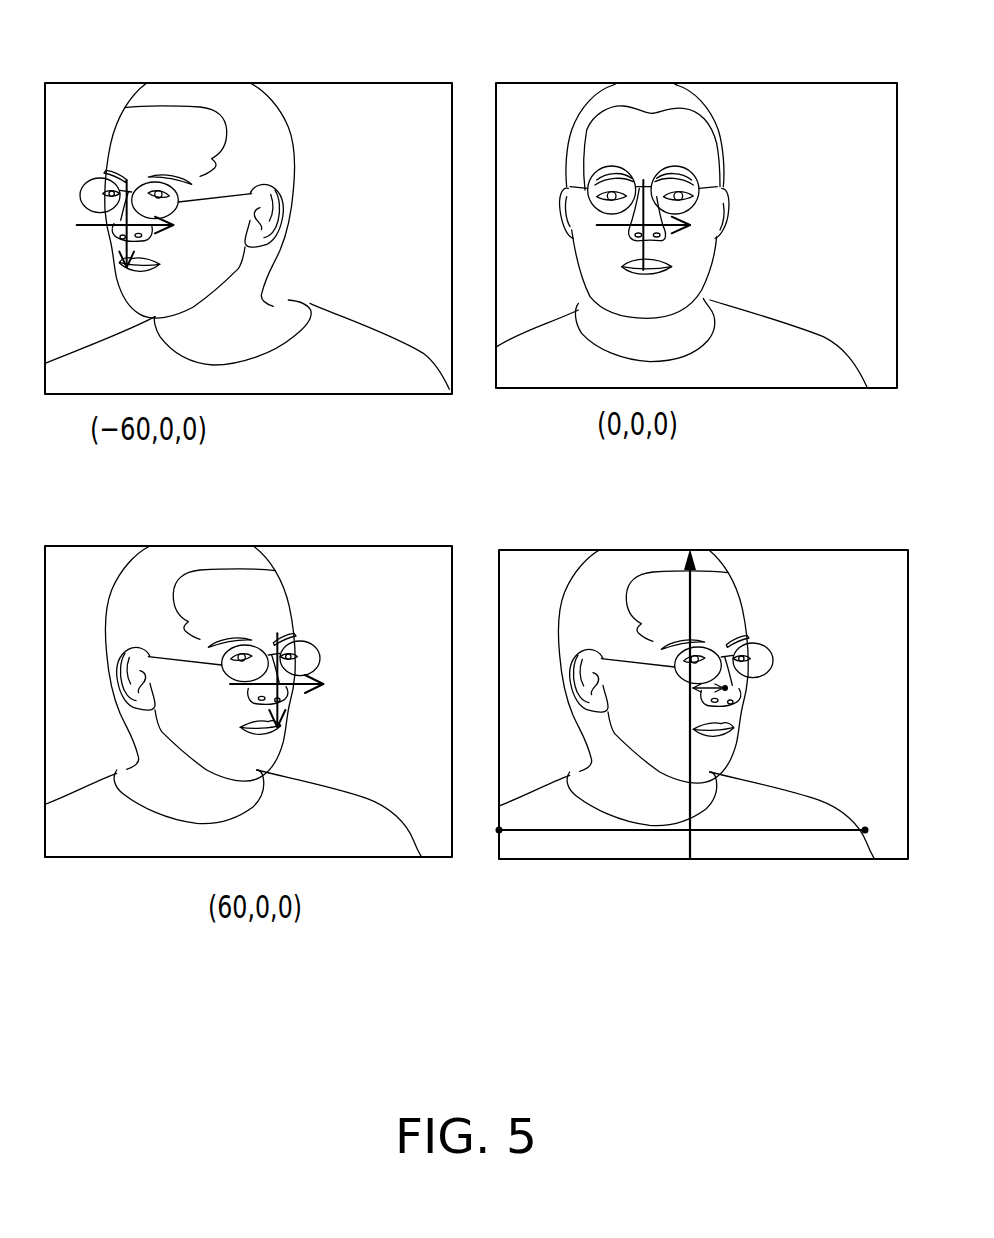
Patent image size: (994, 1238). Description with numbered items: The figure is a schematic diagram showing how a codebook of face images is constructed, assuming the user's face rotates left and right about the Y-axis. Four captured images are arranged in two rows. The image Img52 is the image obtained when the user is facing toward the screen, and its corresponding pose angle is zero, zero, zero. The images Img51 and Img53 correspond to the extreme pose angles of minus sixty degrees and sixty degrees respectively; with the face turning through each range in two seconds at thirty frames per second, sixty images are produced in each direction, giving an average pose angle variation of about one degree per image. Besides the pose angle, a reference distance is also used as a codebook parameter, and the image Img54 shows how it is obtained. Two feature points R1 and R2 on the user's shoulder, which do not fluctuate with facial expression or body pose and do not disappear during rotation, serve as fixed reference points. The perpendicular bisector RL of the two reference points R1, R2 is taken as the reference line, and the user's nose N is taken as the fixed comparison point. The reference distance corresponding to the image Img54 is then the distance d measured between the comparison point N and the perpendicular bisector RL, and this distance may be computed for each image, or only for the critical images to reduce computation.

The image Img51 is at (106, 82).
The image Img52 is at (558, 82).
The image Img53 is at (107, 546).
The image Img54 is at (562, 550).
The perpendicular bisector RL is at (692, 607).
The nose N is at (727, 688).
The distance d is at (692, 706).
The feature point R1 is at (500, 833).
The feature point R2 is at (866, 833).